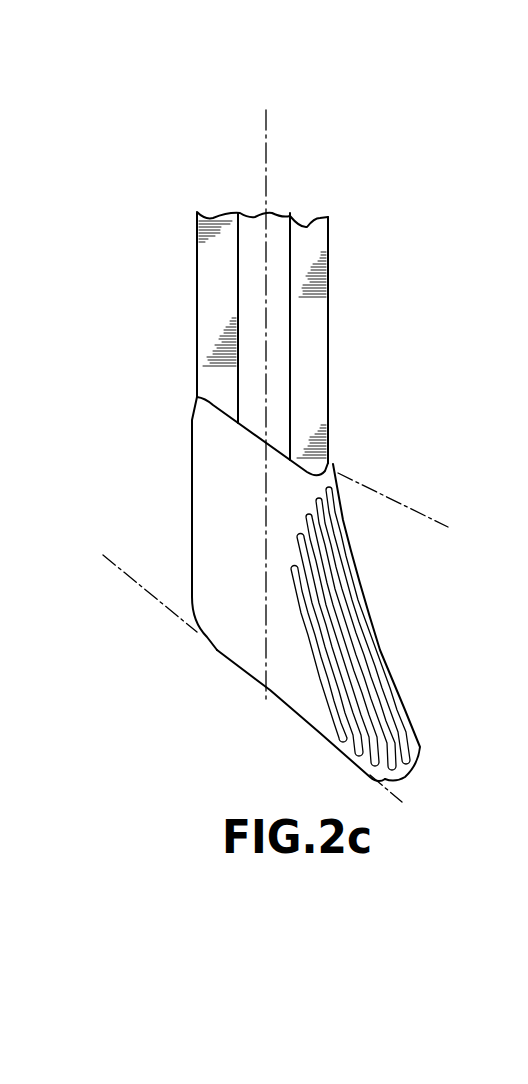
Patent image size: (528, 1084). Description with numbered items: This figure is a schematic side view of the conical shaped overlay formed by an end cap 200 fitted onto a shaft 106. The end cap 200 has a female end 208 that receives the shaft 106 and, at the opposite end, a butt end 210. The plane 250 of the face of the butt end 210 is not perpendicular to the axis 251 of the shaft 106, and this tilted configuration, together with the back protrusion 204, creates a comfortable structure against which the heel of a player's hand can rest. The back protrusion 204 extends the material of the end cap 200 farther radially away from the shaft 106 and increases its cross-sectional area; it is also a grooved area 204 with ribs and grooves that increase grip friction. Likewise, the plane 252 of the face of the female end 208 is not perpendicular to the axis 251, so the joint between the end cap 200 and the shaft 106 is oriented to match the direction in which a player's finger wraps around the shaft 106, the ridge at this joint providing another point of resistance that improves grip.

The axis 251 is at (266, 137).
The shaft 106 is at (320, 275).
The end cap 200 is at (203, 483).
The female end 208 is at (333, 462).
The plane 252 is at (423, 513).
The back protrusion 204 is at (387, 667).
The butt end 210 is at (242, 665).
The plane 250 is at (112, 567).